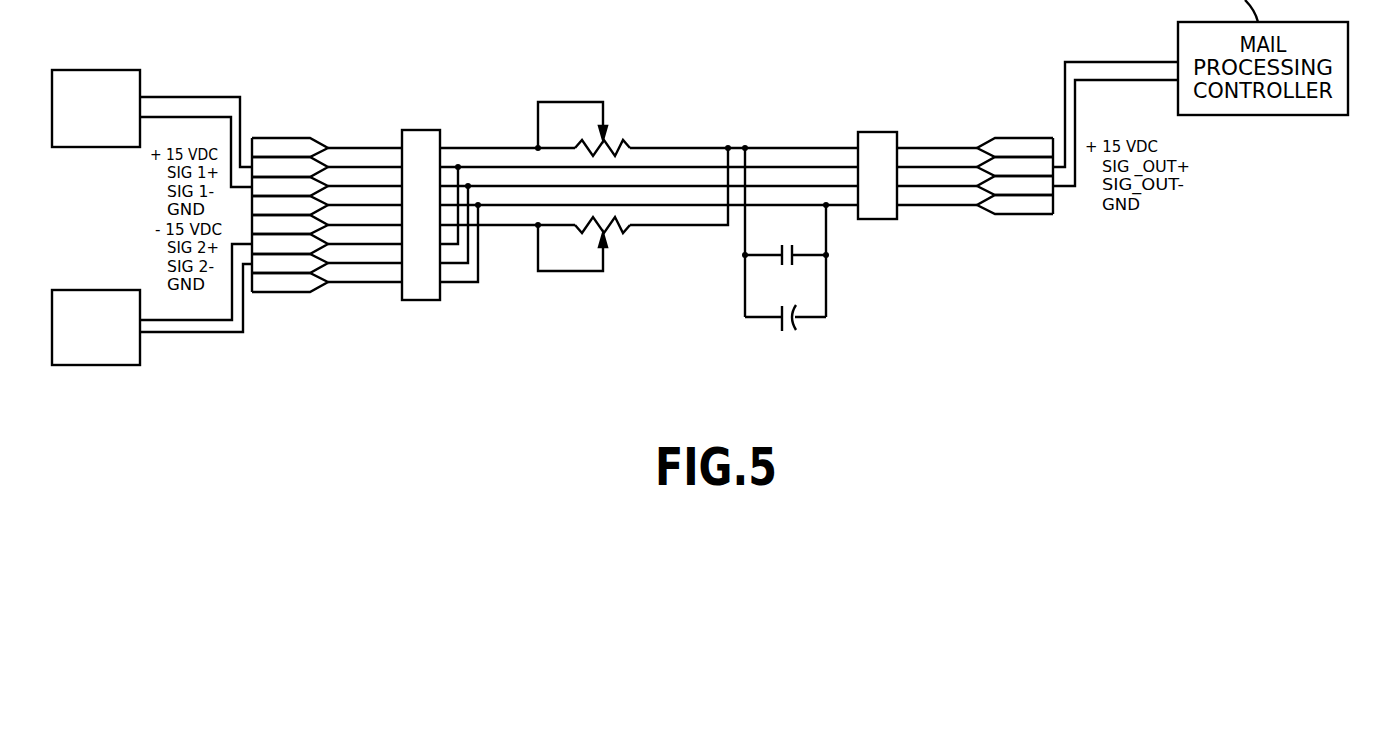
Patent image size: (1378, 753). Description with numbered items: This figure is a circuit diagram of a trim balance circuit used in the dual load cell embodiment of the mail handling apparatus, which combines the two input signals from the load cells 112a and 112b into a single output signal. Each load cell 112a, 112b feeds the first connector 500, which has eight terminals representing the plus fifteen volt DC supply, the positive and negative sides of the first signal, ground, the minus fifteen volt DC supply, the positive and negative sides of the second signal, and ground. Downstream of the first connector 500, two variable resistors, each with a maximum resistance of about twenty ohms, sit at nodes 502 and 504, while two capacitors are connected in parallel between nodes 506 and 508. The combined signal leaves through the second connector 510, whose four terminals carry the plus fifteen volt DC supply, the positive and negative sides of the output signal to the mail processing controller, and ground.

The load cell 112a is at (83, 70).
The load cell 112b is at (92, 365).
The first connector 500 is at (418, 128).
The node 502 is at (537, 148).
The node 504 is at (538, 225).
The node 506 is at (745, 255).
The node 508 is at (826, 255).
The second connector 510 is at (878, 132).